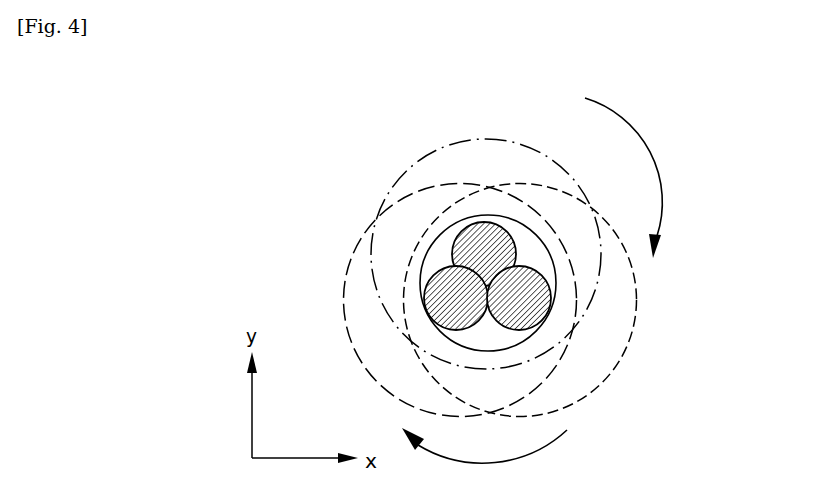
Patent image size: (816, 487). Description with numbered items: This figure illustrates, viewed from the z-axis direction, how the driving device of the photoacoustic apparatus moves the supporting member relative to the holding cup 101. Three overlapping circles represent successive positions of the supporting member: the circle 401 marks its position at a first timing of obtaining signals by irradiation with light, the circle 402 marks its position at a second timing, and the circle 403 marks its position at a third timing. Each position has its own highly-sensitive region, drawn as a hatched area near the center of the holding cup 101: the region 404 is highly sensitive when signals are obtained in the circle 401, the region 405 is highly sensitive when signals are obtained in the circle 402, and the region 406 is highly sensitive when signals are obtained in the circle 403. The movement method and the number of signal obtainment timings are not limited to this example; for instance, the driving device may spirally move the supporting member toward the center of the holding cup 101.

The holding cup 101 is at (445, 237).
The circle 401 is at (500, 139).
The circle 402 is at (637, 302).
The circle 403 is at (343, 298).
The region 404 is at (514, 239).
The region 405 is at (510, 333).
The region 406 is at (432, 272).